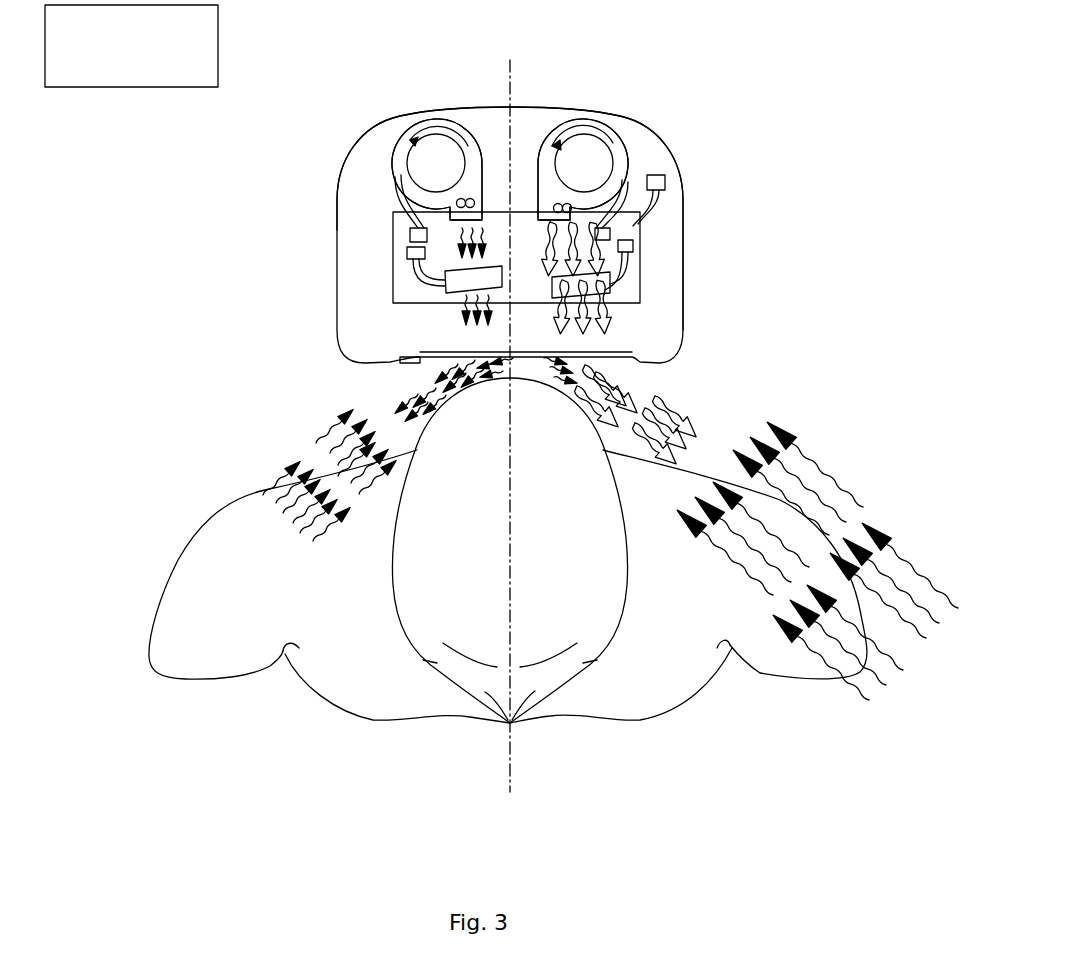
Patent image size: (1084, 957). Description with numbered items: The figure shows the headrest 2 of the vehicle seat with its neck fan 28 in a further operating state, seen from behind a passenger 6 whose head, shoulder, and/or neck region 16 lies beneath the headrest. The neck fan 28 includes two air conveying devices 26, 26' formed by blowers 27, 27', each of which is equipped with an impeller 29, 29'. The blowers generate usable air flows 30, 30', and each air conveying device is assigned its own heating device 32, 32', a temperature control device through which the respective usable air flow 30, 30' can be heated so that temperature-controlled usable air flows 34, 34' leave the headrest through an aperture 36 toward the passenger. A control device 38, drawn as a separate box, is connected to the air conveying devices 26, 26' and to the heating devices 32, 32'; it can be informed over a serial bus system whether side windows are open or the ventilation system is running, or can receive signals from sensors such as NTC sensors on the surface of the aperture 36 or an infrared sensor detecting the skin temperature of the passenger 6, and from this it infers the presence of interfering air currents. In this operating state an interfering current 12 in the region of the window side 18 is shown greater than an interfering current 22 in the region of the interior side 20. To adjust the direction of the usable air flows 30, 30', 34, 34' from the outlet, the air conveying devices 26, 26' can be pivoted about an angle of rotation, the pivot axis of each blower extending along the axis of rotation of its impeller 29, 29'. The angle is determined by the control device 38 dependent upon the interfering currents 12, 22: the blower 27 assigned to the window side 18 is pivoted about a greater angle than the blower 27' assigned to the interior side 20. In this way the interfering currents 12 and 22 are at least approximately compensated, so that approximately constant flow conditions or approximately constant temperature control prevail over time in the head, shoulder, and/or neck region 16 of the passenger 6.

The headrest 2 is at (530, 107).
The passenger 6 is at (693, 703).
The interfering air current 12 is at (840, 487).
The head, shoulder, and/or neck region 16 is at (724, 409).
The window side 18 is at (818, 232).
The interior side 20 is at (262, 204).
The interfering air current 22 is at (327, 431).
The air conveying device 26 is at (591, 125).
The blower 27 is at (583, 169).
The air conveying device 26' is at (422, 125).
The blower 27' is at (437, 169).
The neck fan 28 is at (670, 163).
The impeller 29 is at (621, 130).
The impeller 29' is at (369, 159).
The usable air flow 30 is at (670, 232).
The usable air flow 30' is at (358, 230).
The heating device 32 is at (649, 292).
The heating device 32' is at (386, 280).
The temperature-controlled usable air flow 34 is at (643, 303).
The temperature-controlled usable air flow 34' is at (381, 285).
The aperture 36 is at (390, 358).
The control device 38 is at (131, 54).